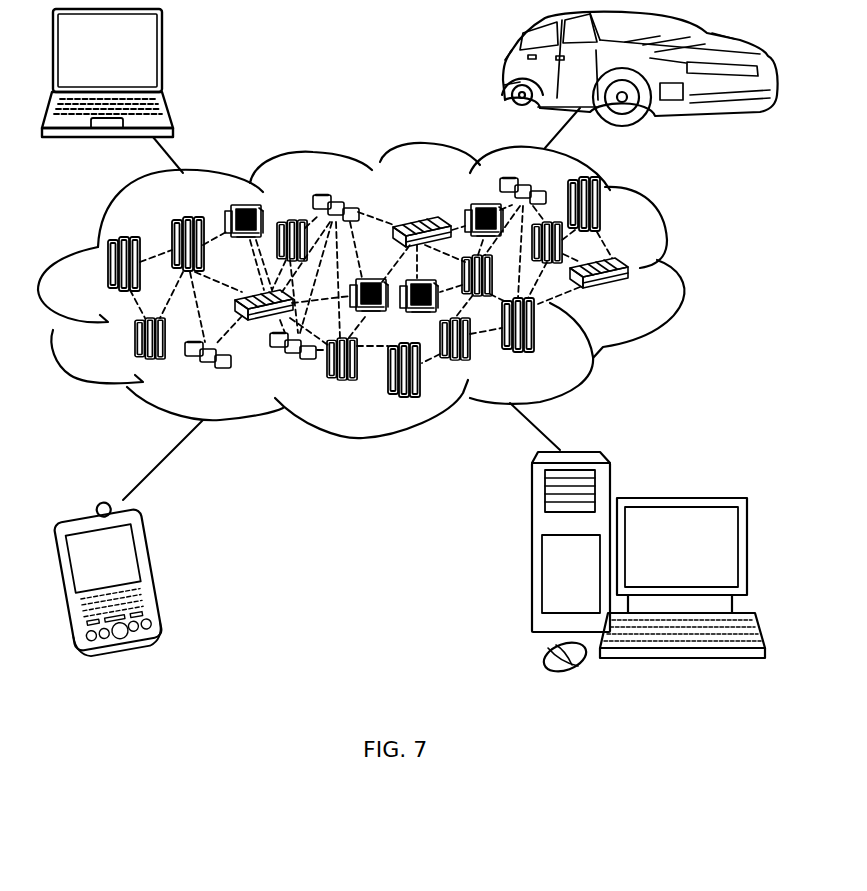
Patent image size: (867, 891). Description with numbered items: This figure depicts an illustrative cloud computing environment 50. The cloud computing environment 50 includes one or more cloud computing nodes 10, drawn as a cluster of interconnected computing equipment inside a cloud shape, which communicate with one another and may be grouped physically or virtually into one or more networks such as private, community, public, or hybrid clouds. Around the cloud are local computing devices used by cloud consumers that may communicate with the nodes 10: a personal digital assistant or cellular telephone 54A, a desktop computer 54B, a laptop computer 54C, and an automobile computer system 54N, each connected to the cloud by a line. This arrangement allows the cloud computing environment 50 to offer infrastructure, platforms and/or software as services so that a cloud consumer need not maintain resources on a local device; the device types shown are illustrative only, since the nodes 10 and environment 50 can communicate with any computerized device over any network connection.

The cloud computing node 10 is at (637, 297).
The cloud computing environment 50 is at (685, 268).
The personal digital assistant (PDA) or cellular telephone 54A is at (155, 572).
The desktop computer 54B is at (680, 497).
The laptop computer 54C is at (162, 55).
The automobile computer system 54N is at (507, 70).